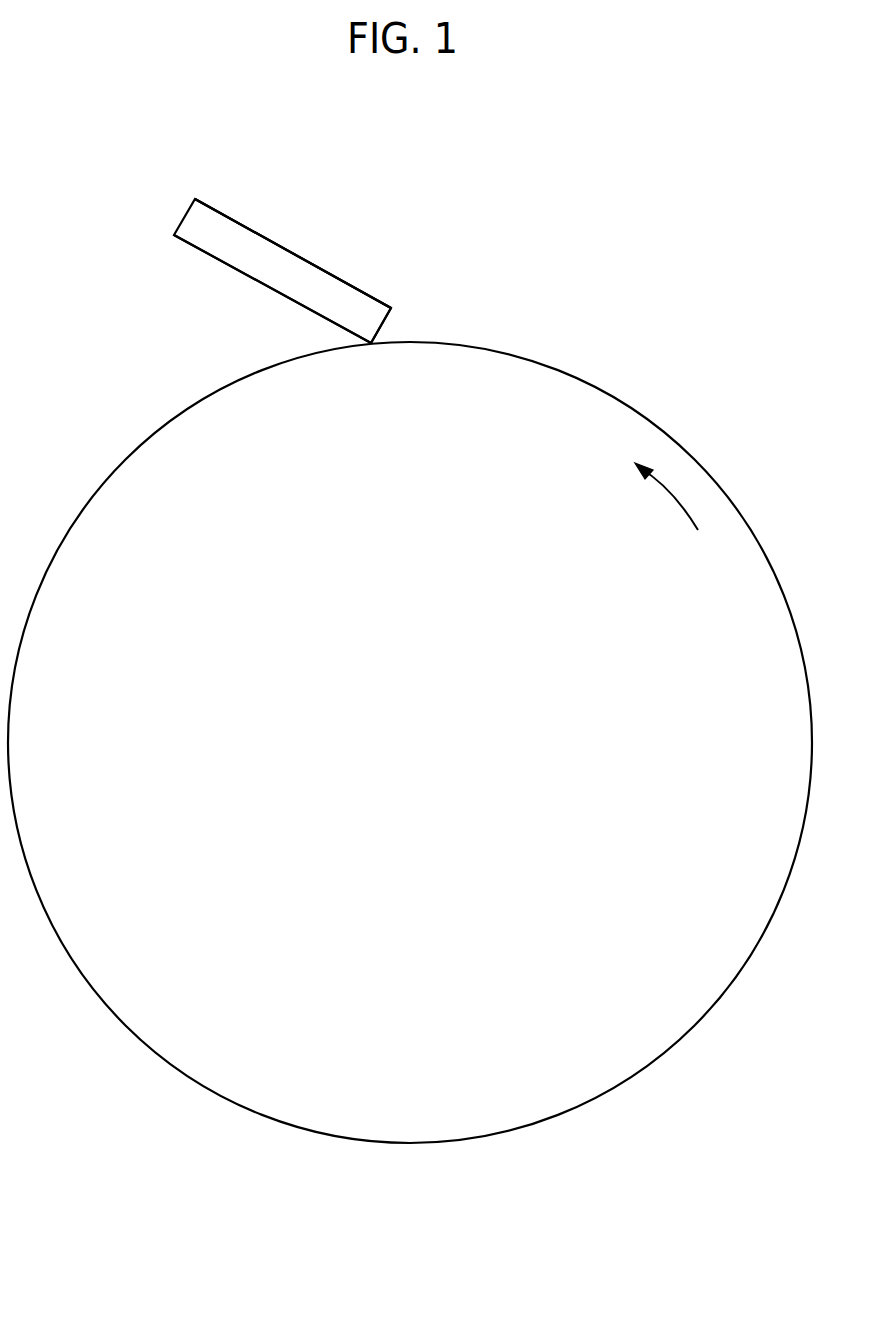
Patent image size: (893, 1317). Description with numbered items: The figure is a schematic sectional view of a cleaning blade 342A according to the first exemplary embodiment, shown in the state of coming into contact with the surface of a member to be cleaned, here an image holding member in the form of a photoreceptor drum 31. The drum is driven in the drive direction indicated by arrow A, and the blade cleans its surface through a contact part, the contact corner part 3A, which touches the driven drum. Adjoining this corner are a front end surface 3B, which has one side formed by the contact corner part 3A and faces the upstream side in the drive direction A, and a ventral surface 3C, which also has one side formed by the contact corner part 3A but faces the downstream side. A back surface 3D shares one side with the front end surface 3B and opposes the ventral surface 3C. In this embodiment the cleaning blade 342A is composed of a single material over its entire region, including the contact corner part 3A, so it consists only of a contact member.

The photoreceptor drum 31 is at (703, 1018).
The contact corner part 3A is at (388, 335).
The front end surface 3B is at (395, 320).
The ventral surface 3C is at (203, 252).
The back surface 3D is at (327, 272).
The cleaning blade 342A is at (240, 233).
The drive direction A is at (666, 496).